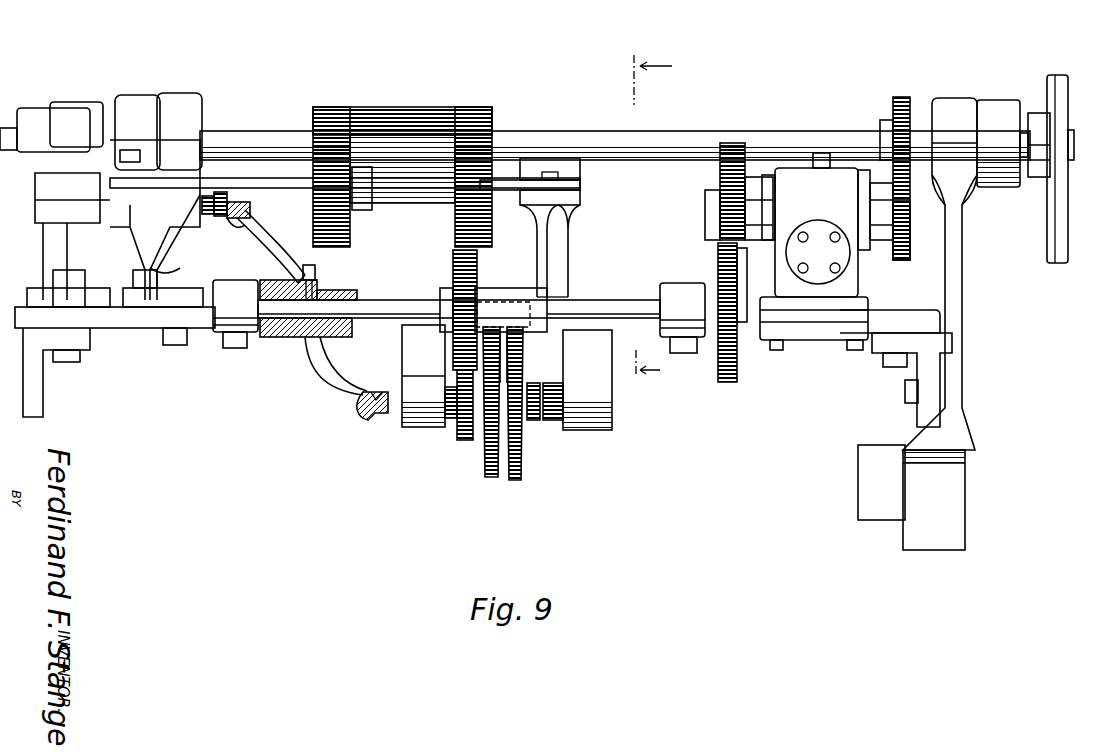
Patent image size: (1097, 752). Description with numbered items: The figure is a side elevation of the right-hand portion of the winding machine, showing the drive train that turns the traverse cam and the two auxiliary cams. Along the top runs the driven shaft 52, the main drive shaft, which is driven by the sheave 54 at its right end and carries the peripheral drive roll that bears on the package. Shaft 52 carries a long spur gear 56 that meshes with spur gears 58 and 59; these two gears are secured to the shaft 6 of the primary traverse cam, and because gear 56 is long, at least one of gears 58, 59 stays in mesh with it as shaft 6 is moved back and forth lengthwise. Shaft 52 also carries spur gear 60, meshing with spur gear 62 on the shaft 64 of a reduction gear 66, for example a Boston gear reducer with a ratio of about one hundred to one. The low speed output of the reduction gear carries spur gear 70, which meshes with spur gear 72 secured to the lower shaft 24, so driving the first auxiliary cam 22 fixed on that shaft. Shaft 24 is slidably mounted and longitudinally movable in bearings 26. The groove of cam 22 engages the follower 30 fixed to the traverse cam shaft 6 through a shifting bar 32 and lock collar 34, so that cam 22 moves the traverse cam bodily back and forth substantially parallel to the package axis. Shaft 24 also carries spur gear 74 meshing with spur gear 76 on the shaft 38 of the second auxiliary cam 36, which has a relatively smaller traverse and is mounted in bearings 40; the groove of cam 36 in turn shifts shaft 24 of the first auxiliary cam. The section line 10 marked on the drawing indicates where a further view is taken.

The shaft 6 is at (204, 206).
The section line 10 is at (652, 218).
The first auxiliary cam 22 is at (342, 393).
The shaft 24 is at (612, 300).
The bearings 26 is at (218, 340).
The follower 30 is at (238, 222).
The shifting bar 32 is at (226, 165).
The lock collar 34 is at (218, 212).
The second auxiliary cam 36 is at (519, 475).
The shaft 38 is at (537, 385).
The bearings 40 is at (420, 427).
The driven shaft 52 is at (262, 131).
The sheave 54 is at (1045, 208).
The long spur gear 56 is at (479, 107).
The spur gear 58 is at (349, 247).
The spur gear 59 is at (455, 234).
The spur gear 60 is at (900, 97).
The spur gear 62 is at (905, 260).
The shaft 64 is at (890, 240).
The reduction gear 66 is at (814, 251).
The spur gear 70 is at (720, 174).
The spur gear 72 is at (727, 383).
The spur gear 74 is at (477, 271).
The spur gear 76 is at (463, 440).